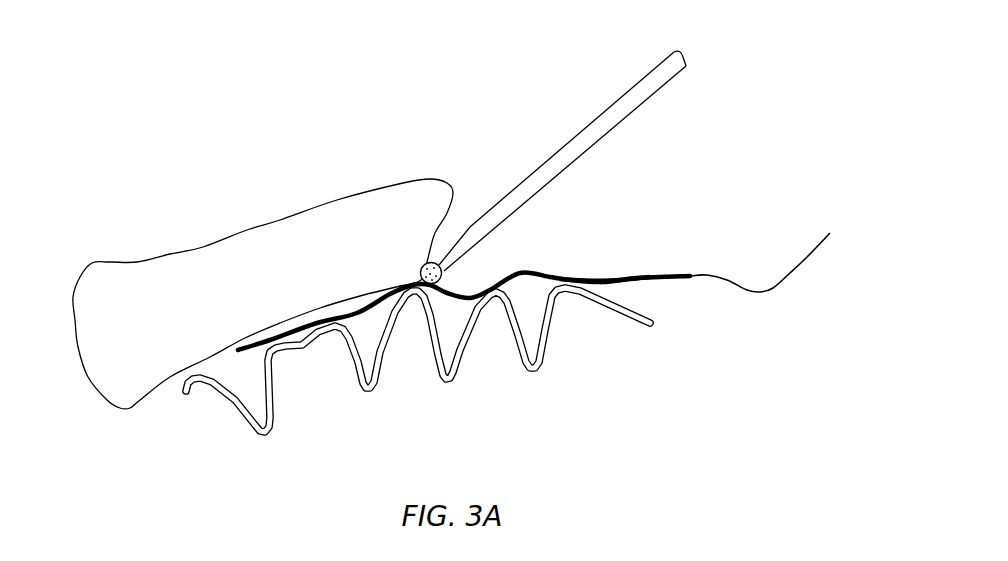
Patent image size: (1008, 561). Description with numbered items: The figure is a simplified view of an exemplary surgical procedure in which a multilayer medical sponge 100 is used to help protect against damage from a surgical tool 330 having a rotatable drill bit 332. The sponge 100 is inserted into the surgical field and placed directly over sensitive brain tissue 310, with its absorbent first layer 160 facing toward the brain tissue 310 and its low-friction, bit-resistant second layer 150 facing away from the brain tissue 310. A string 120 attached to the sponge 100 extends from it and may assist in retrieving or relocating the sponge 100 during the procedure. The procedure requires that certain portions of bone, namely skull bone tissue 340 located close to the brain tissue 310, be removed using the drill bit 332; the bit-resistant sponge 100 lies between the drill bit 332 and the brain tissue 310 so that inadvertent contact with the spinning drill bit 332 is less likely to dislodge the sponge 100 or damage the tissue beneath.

The multilayer medical sponge 100 is at (670, 274).
The string 120 is at (803, 266).
The second layer 150 is at (589, 278).
The first layer 160 is at (641, 288).
The brain tissue 310 is at (554, 333).
The surgical tool 330 is at (597, 114).
The rotatable drill bit 332 is at (450, 278).
The skull bone tissue 340 is at (253, 275).